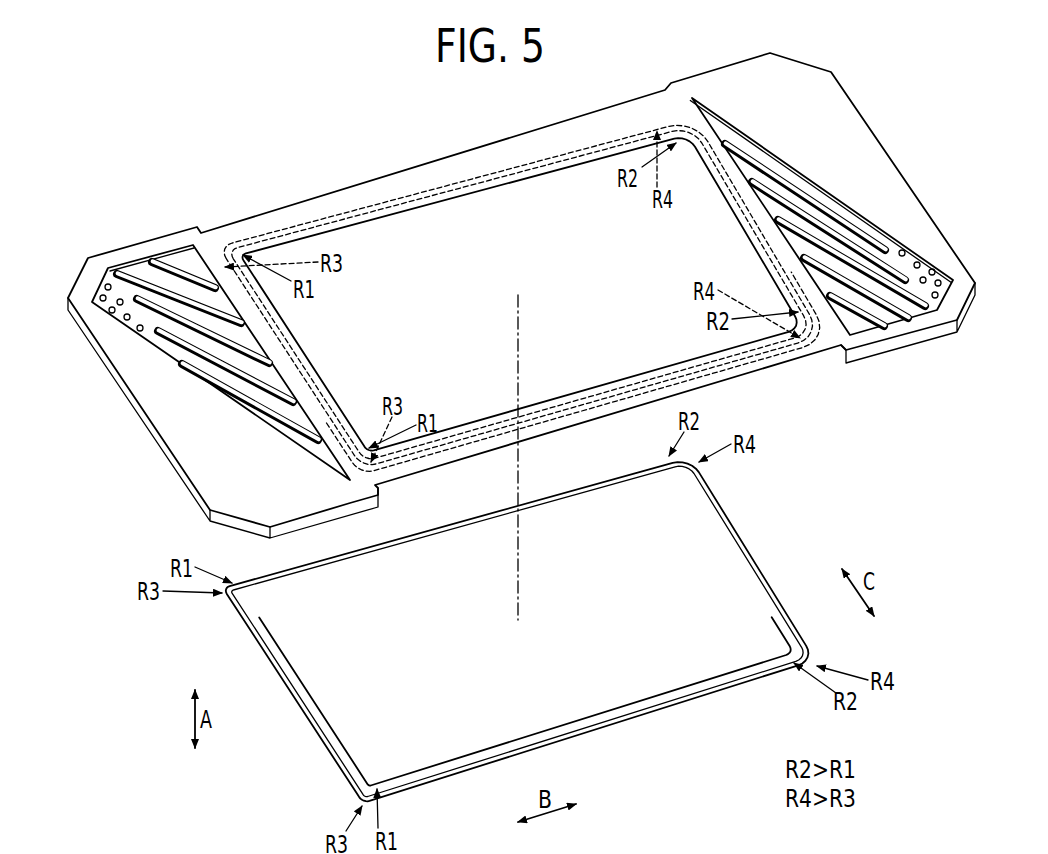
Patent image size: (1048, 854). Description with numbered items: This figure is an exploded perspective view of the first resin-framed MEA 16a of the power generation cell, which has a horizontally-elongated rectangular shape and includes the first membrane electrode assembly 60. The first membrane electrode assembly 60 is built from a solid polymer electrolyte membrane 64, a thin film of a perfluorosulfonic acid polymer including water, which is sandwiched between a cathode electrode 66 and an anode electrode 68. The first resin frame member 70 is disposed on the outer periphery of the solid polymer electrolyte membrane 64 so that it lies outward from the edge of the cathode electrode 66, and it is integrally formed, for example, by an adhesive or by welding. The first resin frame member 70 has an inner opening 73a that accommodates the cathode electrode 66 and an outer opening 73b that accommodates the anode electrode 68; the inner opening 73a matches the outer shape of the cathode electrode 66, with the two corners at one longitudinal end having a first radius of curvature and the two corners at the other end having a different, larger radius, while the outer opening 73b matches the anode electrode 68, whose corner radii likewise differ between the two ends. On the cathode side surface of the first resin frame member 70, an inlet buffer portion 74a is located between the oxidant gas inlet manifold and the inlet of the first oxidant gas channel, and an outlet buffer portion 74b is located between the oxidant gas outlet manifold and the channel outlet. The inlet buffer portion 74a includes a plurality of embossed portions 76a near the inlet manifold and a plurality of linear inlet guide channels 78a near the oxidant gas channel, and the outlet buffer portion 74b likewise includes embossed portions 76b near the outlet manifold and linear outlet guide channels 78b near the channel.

The first resin-framed MEA 16a is at (302, 147).
The first resin frame member 70 is at (385, 181).
The inner opening 73a is at (718, 196).
The outer opening 73b is at (745, 243).
The inlet buffer portion 74a is at (858, 216).
The outlet buffer portion 74b is at (182, 327).
The embossed portions 76a is at (934, 273).
The embossed portions 76b is at (98, 289).
The linear inlet guide channels 78a is at (817, 247).
The linear outlet guide channels 78b is at (227, 376).
The first membrane electrode assembly 60 is at (528, 650).
The solid polymer electrolyte membrane 64 is at (467, 771).
The cathode electrode 66 is at (666, 682).
The anode electrode 68 is at (622, 735).